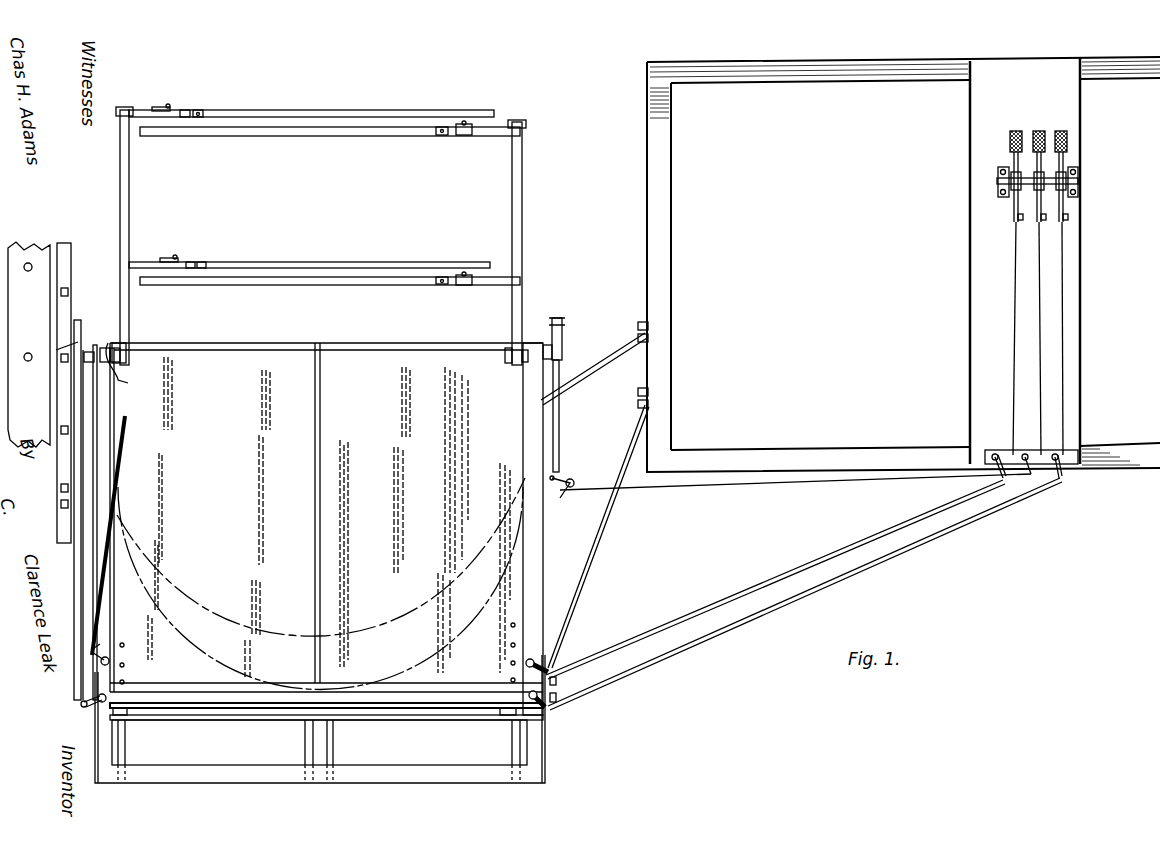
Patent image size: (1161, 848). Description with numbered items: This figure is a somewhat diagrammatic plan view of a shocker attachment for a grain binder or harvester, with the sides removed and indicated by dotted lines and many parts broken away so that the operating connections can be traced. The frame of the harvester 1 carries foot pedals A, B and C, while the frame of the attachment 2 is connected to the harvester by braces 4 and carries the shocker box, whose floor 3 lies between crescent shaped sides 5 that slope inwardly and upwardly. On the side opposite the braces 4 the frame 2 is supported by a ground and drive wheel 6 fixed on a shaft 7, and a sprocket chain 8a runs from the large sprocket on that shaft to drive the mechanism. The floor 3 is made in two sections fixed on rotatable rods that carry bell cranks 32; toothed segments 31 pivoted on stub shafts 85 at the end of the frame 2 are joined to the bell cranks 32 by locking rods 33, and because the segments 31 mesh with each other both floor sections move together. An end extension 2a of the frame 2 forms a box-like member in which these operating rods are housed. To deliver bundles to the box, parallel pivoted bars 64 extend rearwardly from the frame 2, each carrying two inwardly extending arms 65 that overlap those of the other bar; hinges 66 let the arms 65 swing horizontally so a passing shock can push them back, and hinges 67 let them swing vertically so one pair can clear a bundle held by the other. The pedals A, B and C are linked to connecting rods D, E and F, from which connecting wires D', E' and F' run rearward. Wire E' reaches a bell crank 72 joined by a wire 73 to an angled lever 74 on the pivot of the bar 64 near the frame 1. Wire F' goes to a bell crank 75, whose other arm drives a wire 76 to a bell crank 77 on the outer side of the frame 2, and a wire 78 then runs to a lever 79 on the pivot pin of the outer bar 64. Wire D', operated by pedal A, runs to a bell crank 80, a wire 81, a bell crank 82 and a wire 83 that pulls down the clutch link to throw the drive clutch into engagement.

The frame of binder or harvester 1 is at (680, 238).
The frame of the attachment 2 is at (373, 672).
The end extension of the frame 2a is at (547, 735).
The floor 3 is at (329, 517).
The braces 4 is at (612, 345).
The crescent shaped sides 5 is at (395, 620).
The ground and drive wheel 6 is at (29, 344).
The shaft 7 is at (82, 336).
The sprocket chain 8a is at (71, 300).
The toothed segments 31 is at (283, 718).
The bell cranks 32 is at (128, 715).
The locking rods 33 is at (238, 709).
The parallel pivoted bars 64 is at (129, 192).
The inwardly extending arms 65 is at (143, 112).
The hinges 66 is at (170, 105).
The hinges 67 is at (200, 108).
The bell crank 72 is at (570, 478).
The wire 73 is at (559, 440).
The angled lever 74 is at (562, 355).
The bell crank 75 is at (555, 690).
The wire 76 is at (420, 720).
The bell crank 77 is at (82, 702).
The wire 78 is at (78, 552).
The lever 79 is at (128, 383).
The bell crank 80 is at (556, 660).
The wire 81 is at (466, 680).
The bell crank 82 is at (110, 660).
The wire 83 is at (118, 476).
The stub shafts 85 is at (125, 756).
The foot pedal A is at (1010, 128).
The foot pedal B is at (1034, 128).
The foot pedal C is at (1060, 128).
The connecting rod D is at (1000, 338).
The connecting rod E is at (1013, 338).
The connecting rod F is at (1085, 338).
The connecting wire D' is at (776, 566).
The connecting wire E' is at (795, 486).
The connecting wire F' is at (805, 582).